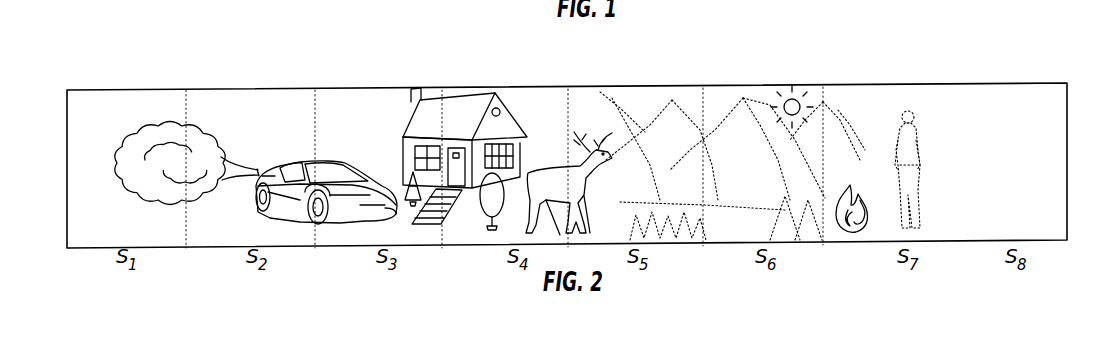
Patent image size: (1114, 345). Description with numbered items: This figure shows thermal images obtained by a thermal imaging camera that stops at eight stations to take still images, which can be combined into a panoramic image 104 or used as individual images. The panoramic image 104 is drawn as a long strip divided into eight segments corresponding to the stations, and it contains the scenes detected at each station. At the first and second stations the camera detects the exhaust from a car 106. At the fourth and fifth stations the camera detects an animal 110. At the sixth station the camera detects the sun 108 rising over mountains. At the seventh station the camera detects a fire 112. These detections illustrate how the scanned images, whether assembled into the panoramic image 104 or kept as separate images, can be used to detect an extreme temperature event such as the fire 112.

The panoramic image 104 is at (131, 80).
The car 106 is at (312, 165).
The sun 108 is at (801, 101).
The animal 110 is at (558, 184).
The fire 112 is at (853, 205).